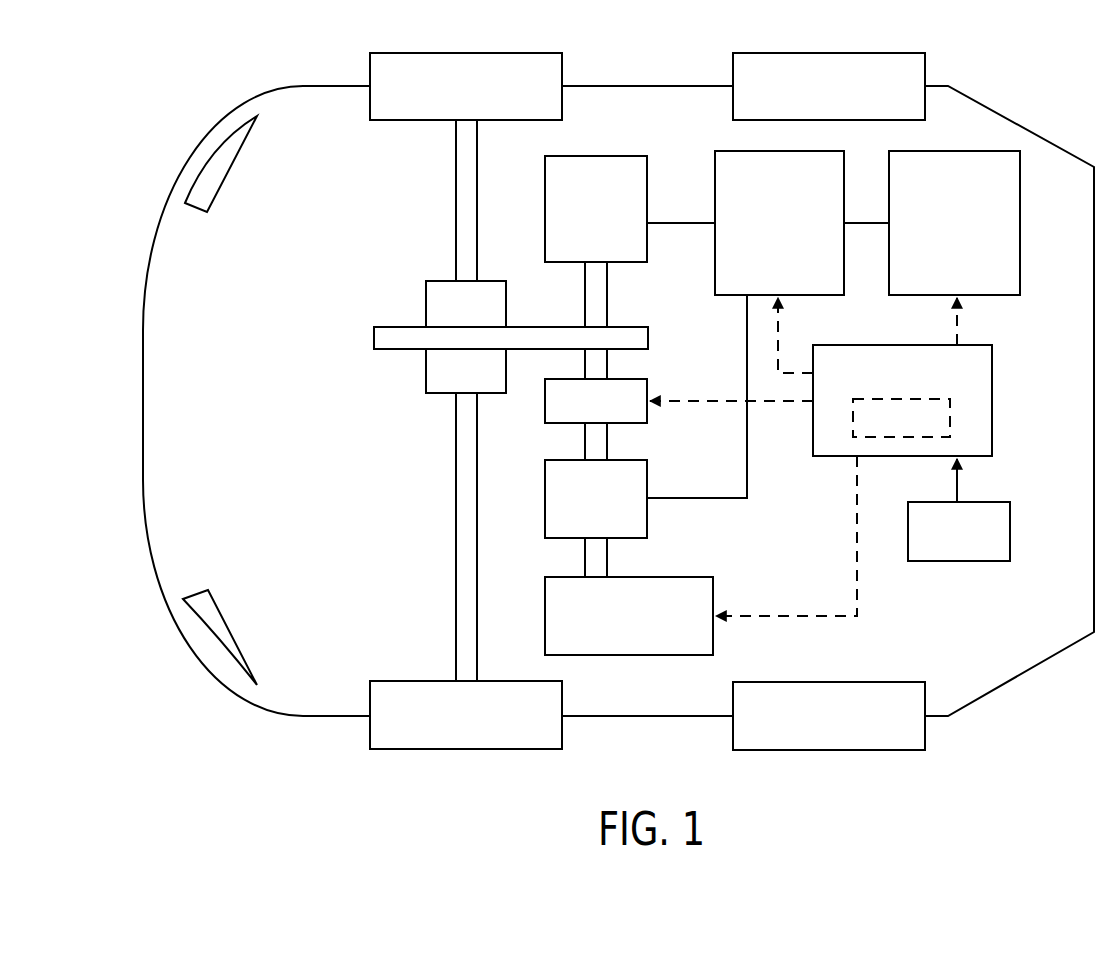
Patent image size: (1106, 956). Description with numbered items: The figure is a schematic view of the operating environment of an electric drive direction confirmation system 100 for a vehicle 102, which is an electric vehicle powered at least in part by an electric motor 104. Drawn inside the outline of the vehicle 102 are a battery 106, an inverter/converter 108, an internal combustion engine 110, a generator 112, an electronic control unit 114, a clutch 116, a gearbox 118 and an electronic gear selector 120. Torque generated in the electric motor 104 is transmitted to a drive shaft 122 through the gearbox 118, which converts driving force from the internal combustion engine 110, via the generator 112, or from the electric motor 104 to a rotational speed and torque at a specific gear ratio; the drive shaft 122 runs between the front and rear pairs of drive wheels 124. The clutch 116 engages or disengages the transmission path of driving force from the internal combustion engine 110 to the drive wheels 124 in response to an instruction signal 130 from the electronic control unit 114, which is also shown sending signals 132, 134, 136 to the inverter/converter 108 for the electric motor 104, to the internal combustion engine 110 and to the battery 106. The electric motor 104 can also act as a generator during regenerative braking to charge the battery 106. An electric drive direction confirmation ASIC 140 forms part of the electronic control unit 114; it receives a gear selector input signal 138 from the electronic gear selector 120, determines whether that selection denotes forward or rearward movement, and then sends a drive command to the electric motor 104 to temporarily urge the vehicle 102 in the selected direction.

The electric drive direction confirmation system 100 is at (541, 804).
The vehicle 102 is at (292, 682).
The electric motor 104 is at (597, 156).
The battery 106 is at (1020, 187).
The inverter/converter 108 is at (715, 258).
The internal combustion engine 110 is at (628, 655).
The generator 112 is at (647, 517).
The electronic control unit 114 is at (992, 392).
The clutch 116 is at (635, 379).
The gearbox 118 is at (426, 370).
The electronic gear selector 120 is at (959, 561).
The drive shaft 122 is at (455, 198).
The drive wheels 124 is at (465, 53).
The instruction signal 130 is at (697, 402).
The signal 132 is at (778, 345).
The signal 134 is at (793, 616).
The signal 136 is at (957, 327).
The gear selector input signal 138 is at (958, 487).
The electric drive direction confirmation ASIC 140 is at (950, 418).